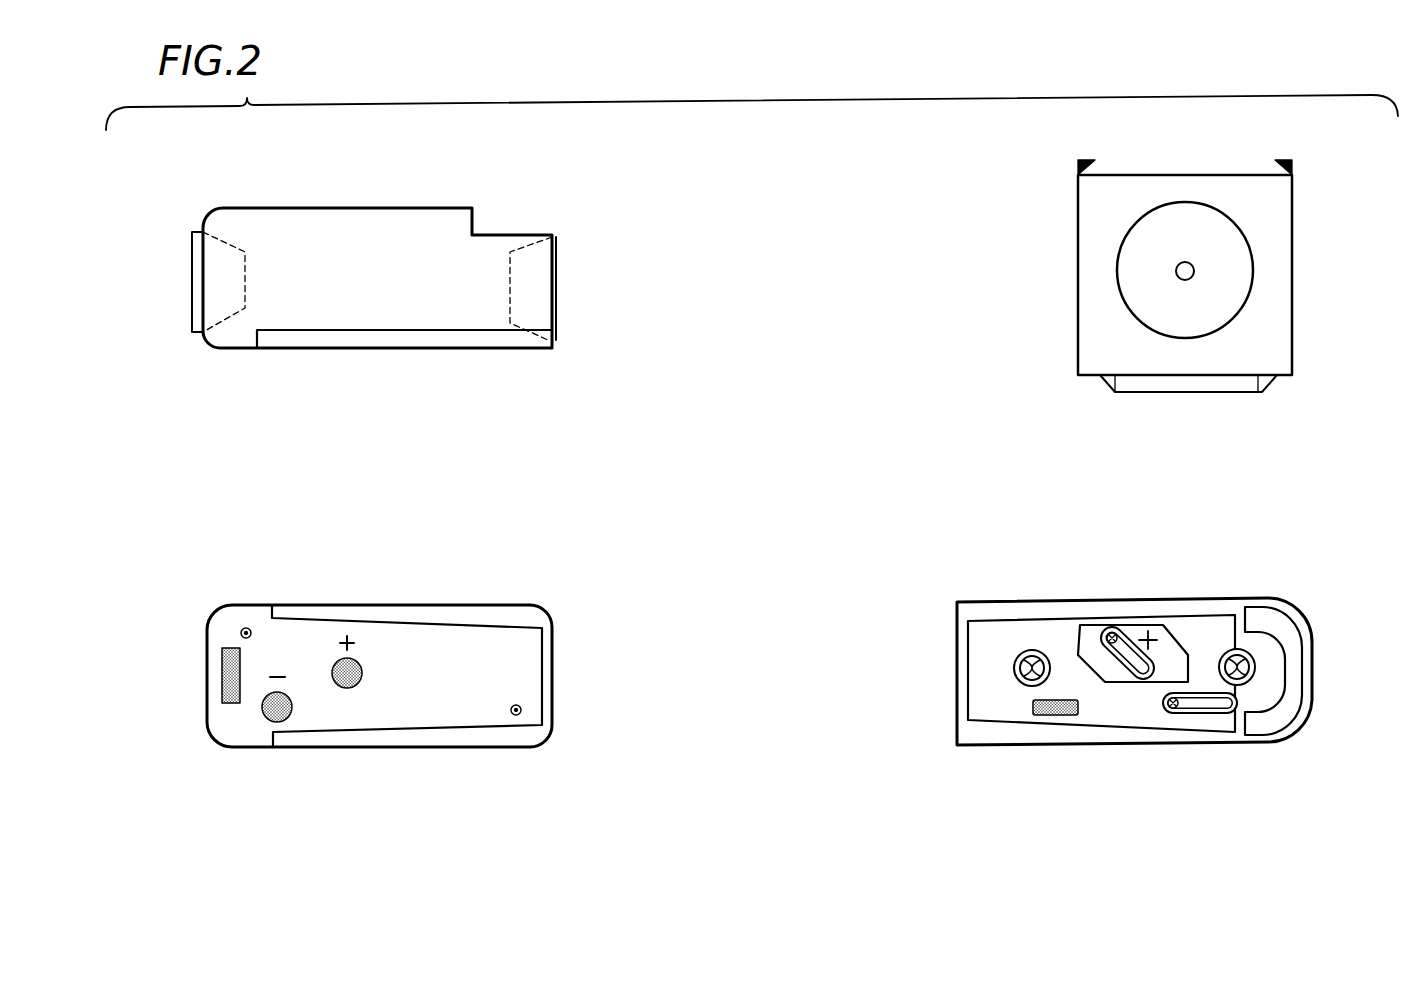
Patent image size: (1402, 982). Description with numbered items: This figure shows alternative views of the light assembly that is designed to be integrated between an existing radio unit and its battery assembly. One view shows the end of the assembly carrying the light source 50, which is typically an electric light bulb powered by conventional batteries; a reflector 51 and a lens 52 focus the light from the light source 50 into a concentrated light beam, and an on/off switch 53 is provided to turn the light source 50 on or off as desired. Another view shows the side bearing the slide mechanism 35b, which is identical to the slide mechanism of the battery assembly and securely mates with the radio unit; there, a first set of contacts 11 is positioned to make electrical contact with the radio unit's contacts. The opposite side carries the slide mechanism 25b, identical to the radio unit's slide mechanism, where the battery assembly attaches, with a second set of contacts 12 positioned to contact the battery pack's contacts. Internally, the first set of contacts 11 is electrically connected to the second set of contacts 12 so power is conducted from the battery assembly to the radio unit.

The light source 50 is at (1178, 265).
The reflector 51 is at (1200, 313).
The lens 52 is at (190, 320).
The on/off switch 53 is at (556, 340).
The first set of contacts 11 is at (333, 682).
The slide mechanism 35b is at (465, 737).
The slide mechanism 25b is at (1002, 732).
The second set of contacts 12 is at (1148, 675).